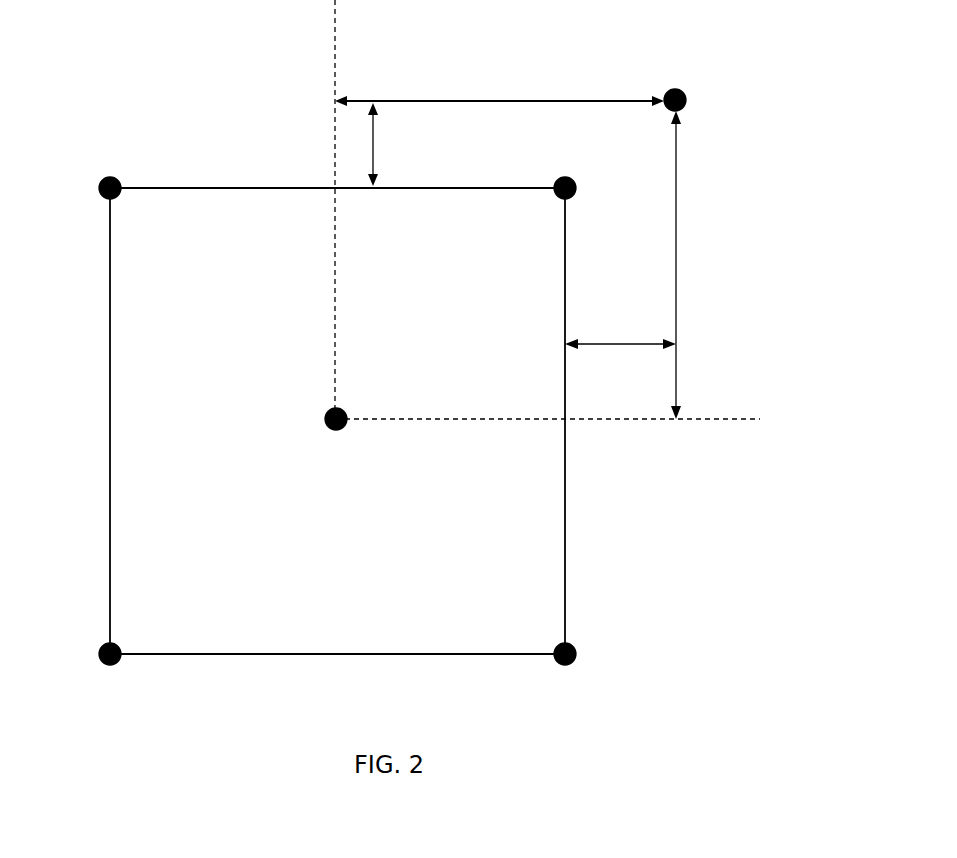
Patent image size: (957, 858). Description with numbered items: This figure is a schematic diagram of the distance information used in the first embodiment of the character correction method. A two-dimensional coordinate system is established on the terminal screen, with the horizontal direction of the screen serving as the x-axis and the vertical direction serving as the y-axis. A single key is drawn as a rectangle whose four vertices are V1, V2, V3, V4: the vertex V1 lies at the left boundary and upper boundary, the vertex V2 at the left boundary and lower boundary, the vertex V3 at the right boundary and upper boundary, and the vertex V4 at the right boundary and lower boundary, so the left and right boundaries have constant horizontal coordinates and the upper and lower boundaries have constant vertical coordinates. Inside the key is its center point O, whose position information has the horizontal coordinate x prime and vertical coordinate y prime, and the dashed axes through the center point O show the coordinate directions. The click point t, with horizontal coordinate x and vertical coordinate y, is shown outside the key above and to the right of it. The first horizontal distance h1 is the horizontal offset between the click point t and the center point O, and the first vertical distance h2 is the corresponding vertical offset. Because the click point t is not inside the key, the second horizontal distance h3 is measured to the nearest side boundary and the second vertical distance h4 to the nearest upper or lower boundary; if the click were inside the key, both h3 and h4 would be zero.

The first vertex of key V1 is at (313, 401).
The second vertex of key V2 is at (313, 677).
The third vertex of key V3 is at (543, 401).
The fourth vertex of key V4 is at (573, 678).
The center point of key O is at (324, 434).
The position information of click point t is at (690, 74).
The first horizontal distance h1 is at (499, 83).
The first vertical distance h2 is at (694, 265).
The second horizontal distance h3 is at (391, 144).
The second vertical distance h4 is at (620, 329).